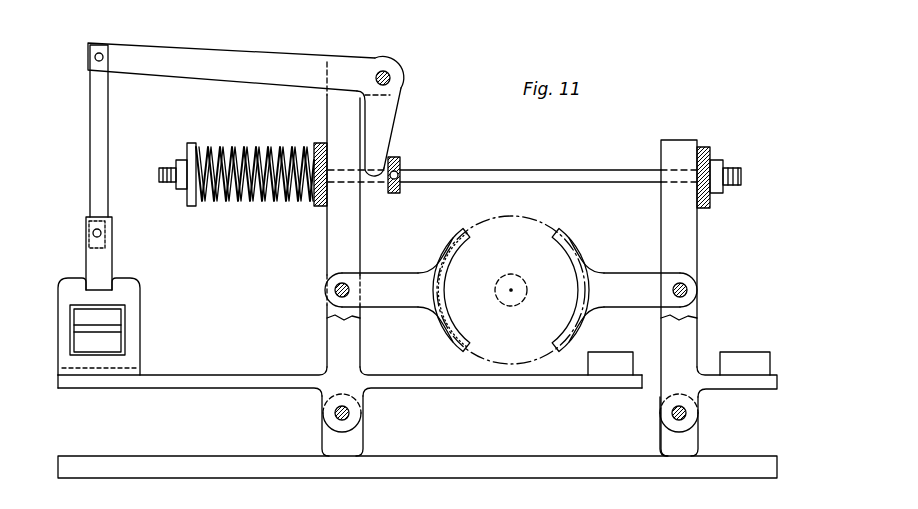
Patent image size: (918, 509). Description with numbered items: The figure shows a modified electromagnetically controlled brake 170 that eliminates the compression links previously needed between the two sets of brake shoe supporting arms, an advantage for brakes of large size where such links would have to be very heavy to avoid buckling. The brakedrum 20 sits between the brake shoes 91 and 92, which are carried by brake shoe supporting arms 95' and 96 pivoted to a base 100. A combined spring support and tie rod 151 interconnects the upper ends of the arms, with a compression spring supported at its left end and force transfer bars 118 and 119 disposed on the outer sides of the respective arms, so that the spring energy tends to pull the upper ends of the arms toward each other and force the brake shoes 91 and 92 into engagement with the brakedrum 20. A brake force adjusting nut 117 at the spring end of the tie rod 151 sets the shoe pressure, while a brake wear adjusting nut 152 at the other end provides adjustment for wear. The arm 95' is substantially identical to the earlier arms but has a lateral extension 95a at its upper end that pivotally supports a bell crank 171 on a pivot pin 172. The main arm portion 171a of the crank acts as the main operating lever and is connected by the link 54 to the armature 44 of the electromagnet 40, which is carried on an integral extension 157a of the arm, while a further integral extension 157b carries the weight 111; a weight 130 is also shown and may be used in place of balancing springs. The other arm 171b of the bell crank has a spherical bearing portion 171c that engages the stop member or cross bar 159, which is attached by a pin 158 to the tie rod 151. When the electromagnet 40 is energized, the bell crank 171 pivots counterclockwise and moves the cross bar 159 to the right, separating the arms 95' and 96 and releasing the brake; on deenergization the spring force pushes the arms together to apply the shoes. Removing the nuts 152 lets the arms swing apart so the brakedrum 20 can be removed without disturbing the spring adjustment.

The main arm portion 171a is at (165, 50).
The bell crank 171 is at (275, 116).
The lateral extension 95a is at (380, 58).
The pivot pin 172 is at (404, 82).
The other arm of the bell crank 171b is at (390, 110).
The spherical bearing portion 171c is at (378, 188).
The stop member or cross bar 159 is at (397, 158).
The pin 158 is at (400, 168).
The combined spring support and tie rod 151 is at (516, 172).
The force transfer bar 119 is at (707, 148).
The brake wear adjusting nut 152 is at (722, 166).
The link or clevis 54 is at (102, 121).
The brake force adjusting nut 117 is at (183, 160).
The force transfer bar 118 is at (320, 145).
The brakedrum 20 is at (536, 220).
The brake shoe 91 is at (438, 238).
The brake shoe 92 is at (590, 242).
The brake shoe supporting arm 96 is at (682, 235).
The brake shoe supporting arm 95' is at (331, 214).
The armature 44 is at (108, 256).
The electromagnet 40 is at (142, 313).
The weight 111 is at (612, 356).
The weight 130 is at (750, 356).
The integral extension 157a is at (222, 378).
The integral extension 157b is at (502, 388).
The brake 170 is at (417, 481).
The base 100 is at (516, 472).